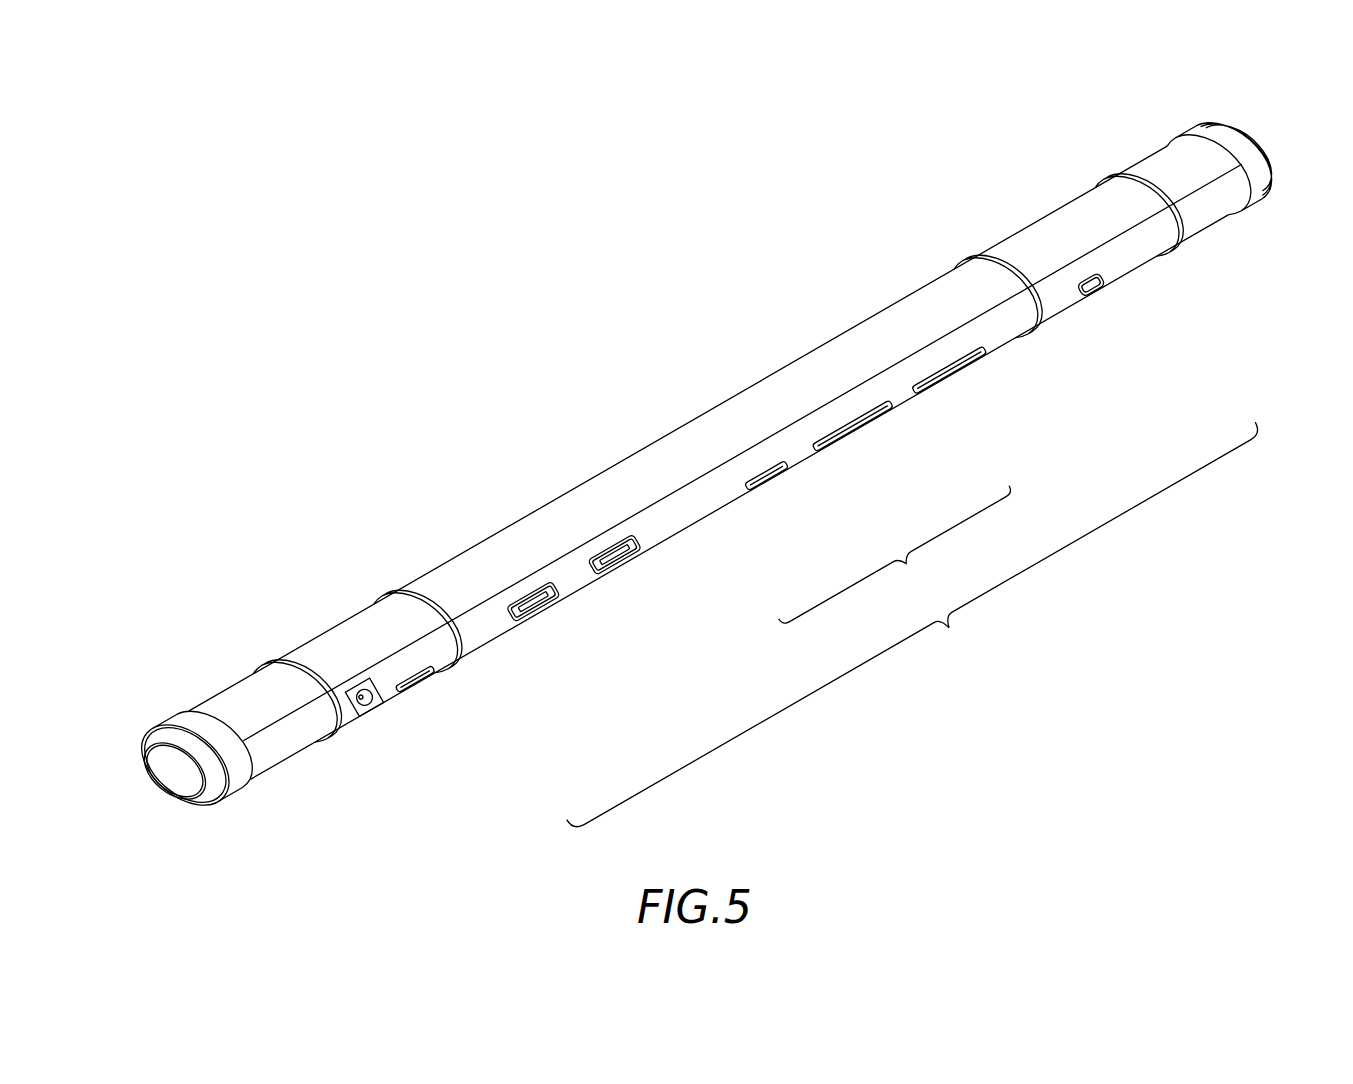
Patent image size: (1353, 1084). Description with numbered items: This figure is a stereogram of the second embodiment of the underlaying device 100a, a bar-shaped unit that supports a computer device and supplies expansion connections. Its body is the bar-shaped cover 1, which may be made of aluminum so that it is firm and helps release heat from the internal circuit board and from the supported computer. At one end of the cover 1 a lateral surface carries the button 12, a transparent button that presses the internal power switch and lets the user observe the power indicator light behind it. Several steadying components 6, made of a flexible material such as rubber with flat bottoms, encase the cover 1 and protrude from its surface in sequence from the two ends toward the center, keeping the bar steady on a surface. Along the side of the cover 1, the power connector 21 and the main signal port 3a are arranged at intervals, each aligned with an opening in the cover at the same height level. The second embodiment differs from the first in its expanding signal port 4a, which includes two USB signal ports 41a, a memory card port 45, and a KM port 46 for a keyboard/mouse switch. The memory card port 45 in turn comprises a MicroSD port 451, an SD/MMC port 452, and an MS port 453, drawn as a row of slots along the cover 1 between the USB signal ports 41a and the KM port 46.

The electronic device 100a is at (693, 476).
The bar-shaped cover 1 is at (750, 407).
The button 12 is at (180, 778).
The steadying component 6 is at (274, 660).
The power connector 21 is at (370, 710).
The slot 3a is at (417, 684).
The USB signal port 41a is at (530, 622).
The expanding signal port 4a is at (887, 556).
The memory card port 45 is at (881, 489).
The MicroSD port 451 is at (769, 482).
The SD/MMC port 452 is at (855, 432).
The MS port 453 is at (951, 376).
The KM port 46 is at (1095, 293).